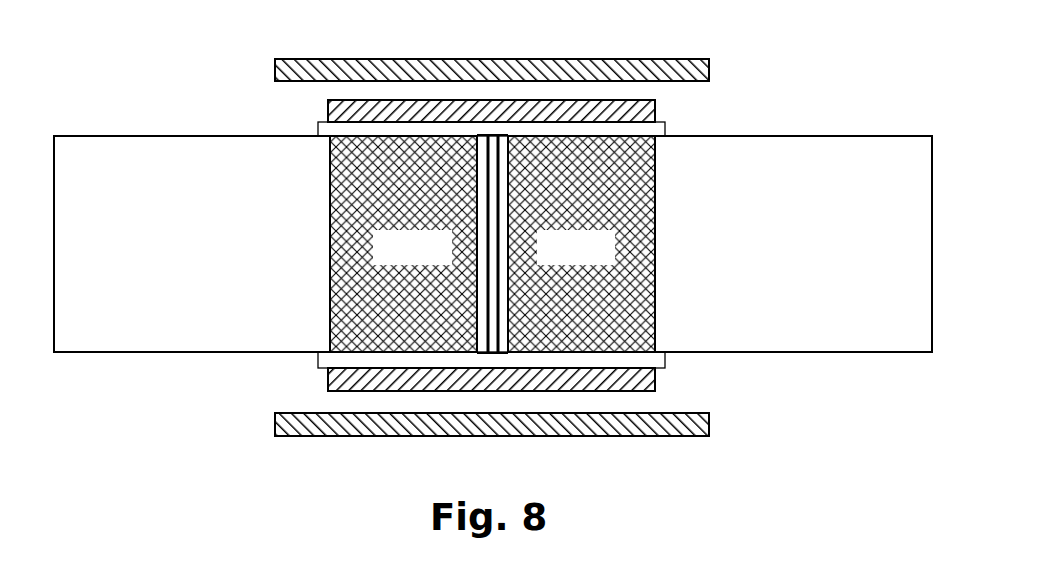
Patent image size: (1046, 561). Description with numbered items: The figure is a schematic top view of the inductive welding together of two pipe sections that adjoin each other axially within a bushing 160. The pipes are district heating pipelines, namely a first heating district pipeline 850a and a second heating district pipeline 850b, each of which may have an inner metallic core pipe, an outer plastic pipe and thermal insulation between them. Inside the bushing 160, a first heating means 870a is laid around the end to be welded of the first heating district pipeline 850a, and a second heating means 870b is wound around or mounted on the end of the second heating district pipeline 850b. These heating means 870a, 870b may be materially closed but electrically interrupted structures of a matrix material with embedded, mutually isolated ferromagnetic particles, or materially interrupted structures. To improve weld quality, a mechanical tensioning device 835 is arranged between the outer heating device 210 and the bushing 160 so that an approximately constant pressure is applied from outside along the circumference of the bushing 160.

The bushing 160 is at (666, 131).
The heating device 210 is at (290, 59).
The mechanical tensioning device 835 is at (328, 101).
The first heating district pipeline 850a is at (204, 256).
The second heating district pipeline 850b is at (838, 256).
The first heating means 870a is at (439, 256).
The second heating means 870b is at (601, 256).